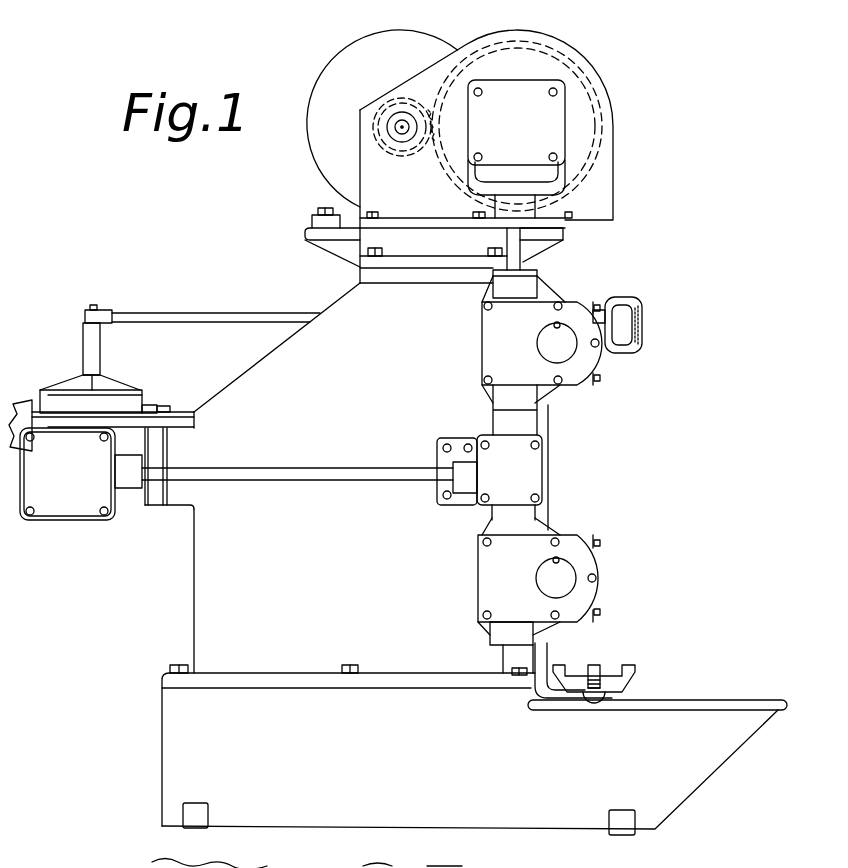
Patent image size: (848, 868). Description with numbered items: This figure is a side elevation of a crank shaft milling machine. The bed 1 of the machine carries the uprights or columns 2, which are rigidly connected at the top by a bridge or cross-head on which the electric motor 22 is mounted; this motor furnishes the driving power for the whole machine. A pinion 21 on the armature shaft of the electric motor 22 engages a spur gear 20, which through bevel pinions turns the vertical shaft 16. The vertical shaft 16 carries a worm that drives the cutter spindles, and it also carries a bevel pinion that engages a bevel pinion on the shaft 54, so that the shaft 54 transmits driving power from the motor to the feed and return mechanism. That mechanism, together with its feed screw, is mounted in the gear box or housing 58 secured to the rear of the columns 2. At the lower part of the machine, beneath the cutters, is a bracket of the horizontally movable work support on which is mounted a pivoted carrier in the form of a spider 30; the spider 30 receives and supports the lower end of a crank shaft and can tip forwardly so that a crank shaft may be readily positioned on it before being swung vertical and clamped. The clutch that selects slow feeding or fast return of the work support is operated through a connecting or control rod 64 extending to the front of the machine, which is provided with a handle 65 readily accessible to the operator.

The bed 1 is at (497, 781).
The uprights or columns 2 is at (208, 552).
The vertical shaft 16 is at (517, 252).
The spur gear 20 is at (605, 128).
The pinion 21 is at (402, 152).
The electric motor 22 is at (428, 47).
The spider 30 is at (605, 682).
The shaft 54 is at (287, 469).
The gear box or housing 58 is at (130, 403).
The connecting or control rod 64 is at (233, 320).
The handle 65 is at (640, 313).